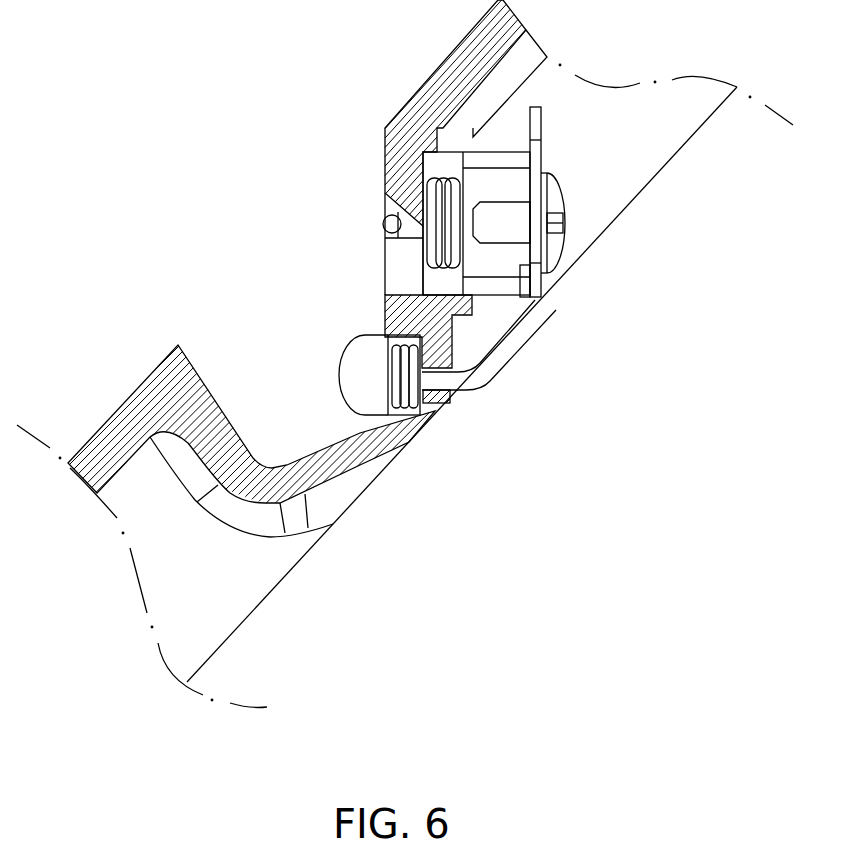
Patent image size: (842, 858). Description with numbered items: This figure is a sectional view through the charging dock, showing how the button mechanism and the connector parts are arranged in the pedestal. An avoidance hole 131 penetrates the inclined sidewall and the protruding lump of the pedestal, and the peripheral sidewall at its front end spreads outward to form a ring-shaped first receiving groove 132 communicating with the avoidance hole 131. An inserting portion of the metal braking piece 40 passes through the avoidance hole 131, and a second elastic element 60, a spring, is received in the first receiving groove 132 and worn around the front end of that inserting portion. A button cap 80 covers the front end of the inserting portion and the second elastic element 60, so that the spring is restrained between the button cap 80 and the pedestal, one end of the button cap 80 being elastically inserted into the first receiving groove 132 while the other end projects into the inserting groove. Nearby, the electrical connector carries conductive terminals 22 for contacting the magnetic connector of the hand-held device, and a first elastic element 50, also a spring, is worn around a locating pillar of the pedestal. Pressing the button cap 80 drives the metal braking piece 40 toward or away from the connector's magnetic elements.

The conductive terminal 22 is at (410, 227).
The first receiving groove 132 is at (403, 338).
The button cap 80 is at (360, 375).
The second elastic element 60 is at (422, 417).
The first elastic element 50 is at (452, 245).
The metal braking piece 40 is at (487, 343).
The avoidance hole 131 is at (437, 392).